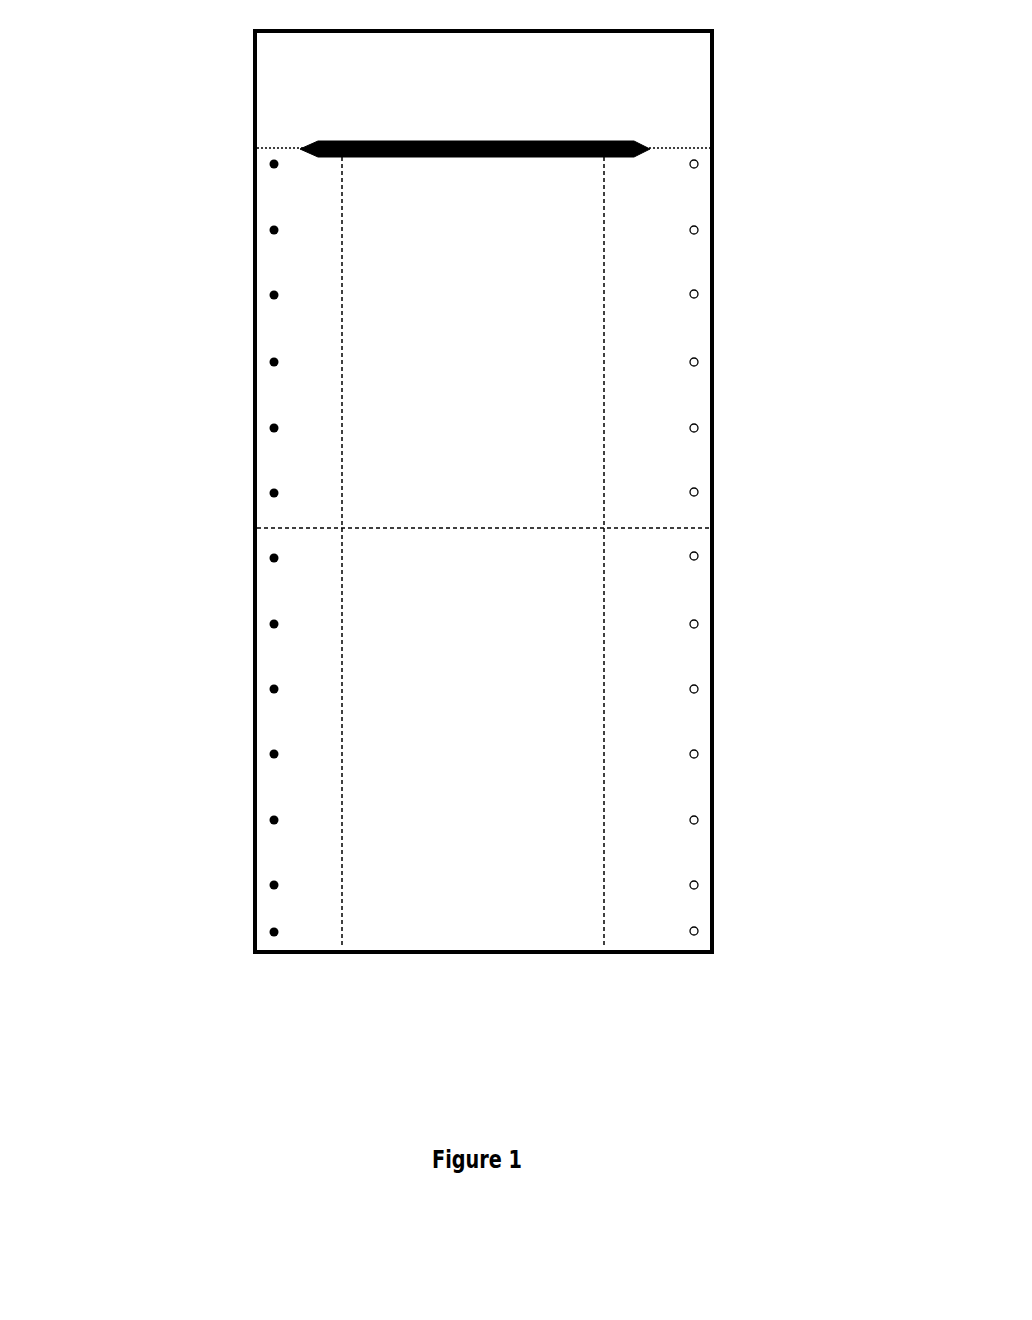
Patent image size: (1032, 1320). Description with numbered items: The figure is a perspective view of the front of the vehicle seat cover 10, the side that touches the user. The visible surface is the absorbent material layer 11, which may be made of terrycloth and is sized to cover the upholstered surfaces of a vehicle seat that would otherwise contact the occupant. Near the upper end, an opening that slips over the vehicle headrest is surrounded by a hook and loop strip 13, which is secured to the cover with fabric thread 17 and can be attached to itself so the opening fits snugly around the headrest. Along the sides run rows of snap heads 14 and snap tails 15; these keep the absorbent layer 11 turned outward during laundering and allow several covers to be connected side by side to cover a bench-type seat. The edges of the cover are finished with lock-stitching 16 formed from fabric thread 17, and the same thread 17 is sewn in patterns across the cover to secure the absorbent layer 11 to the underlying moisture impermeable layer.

The vehicle seat cover 10 is at (220, 873).
The absorbent material layer 11 is at (658, 327).
The hook and loop strip 13 is at (620, 138).
The snap head 14 is at (268, 556).
The snap tail 15 is at (697, 553).
The lock-stitching 16 is at (712, 806).
The fabric thread 17 is at (341, 339).